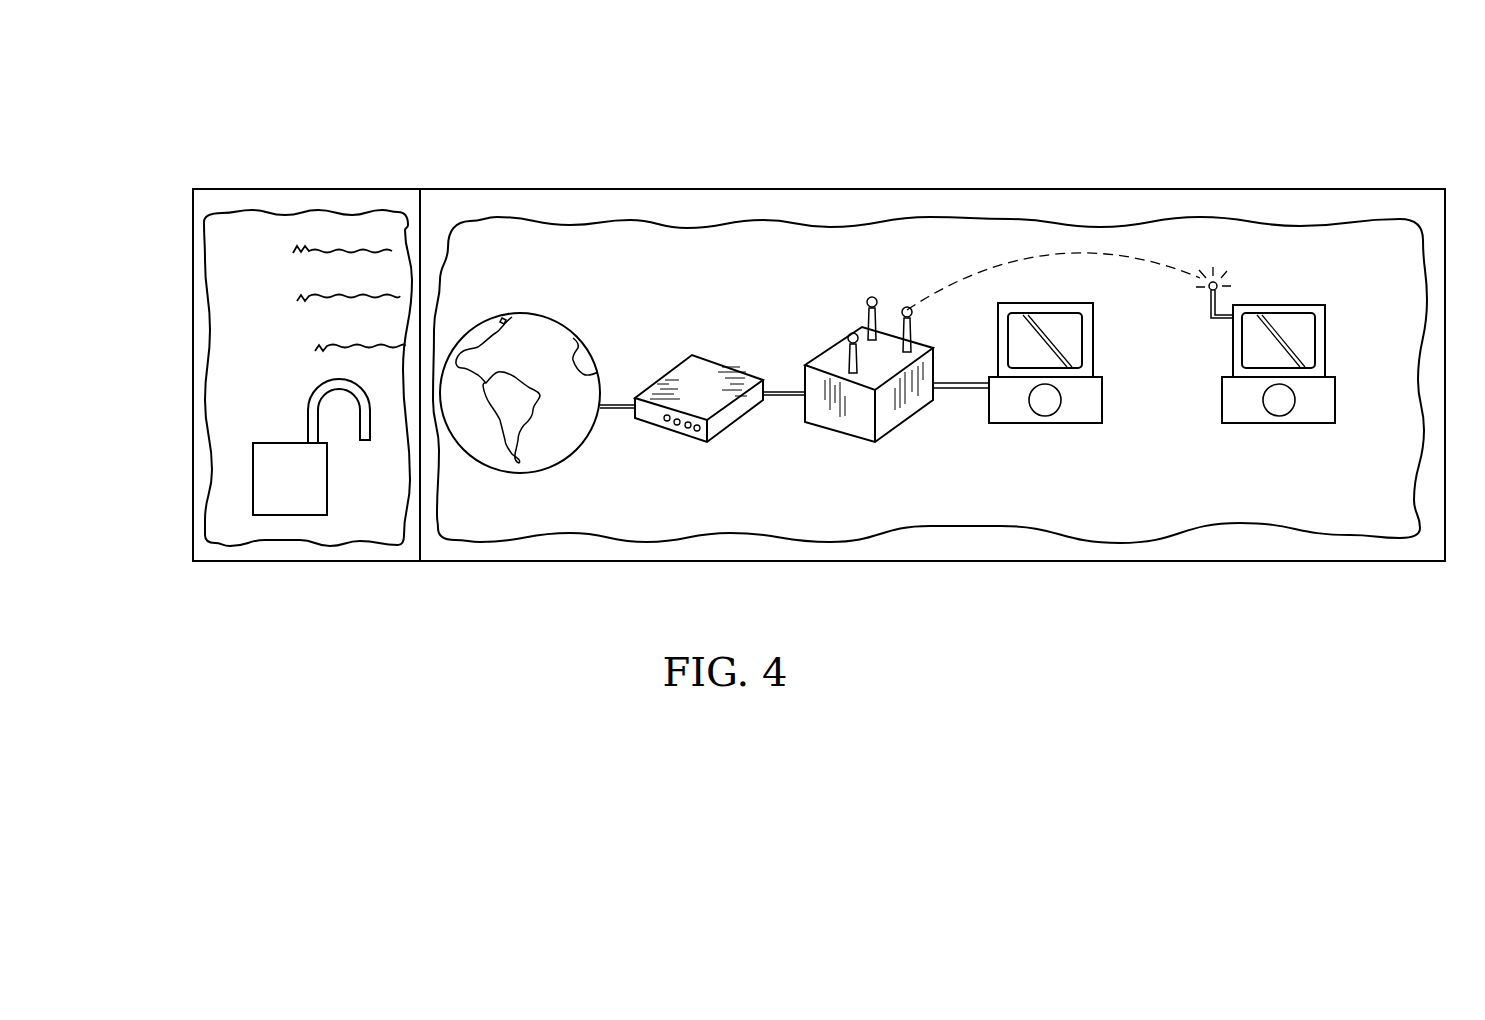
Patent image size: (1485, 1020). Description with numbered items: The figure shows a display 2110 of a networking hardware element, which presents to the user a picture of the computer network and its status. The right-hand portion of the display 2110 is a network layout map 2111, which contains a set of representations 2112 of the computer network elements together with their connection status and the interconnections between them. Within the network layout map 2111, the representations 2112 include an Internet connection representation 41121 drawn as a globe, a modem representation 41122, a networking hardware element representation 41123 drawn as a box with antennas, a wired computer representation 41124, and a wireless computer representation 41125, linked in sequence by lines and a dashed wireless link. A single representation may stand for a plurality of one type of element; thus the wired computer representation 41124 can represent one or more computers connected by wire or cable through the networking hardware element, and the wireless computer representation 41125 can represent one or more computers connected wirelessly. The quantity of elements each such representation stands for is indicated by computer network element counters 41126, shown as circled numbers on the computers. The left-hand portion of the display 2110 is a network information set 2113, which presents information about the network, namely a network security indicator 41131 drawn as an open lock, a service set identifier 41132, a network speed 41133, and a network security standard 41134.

The display 2110 is at (452, 644).
The network layout map 2111 is at (1152, 543).
The representations 2112 is at (1044, 93).
The network information set 2113 is at (237, 545).
The Internet connection representation 41121 is at (532, 312).
The modem representation 41122 is at (710, 355).
The networking hardware element representation 41123 is at (862, 327).
The wired computer representation 41124 is at (1043, 303).
The wireless computer representation 41125 is at (1278, 305).
The computer network element counters 41126 is at (1045, 423).
The network security indicator 41131 is at (311, 447).
The service set identifier 41132 is at (210, 250).
The network speed 41133 is at (210, 298).
The network security standard 41134 is at (210, 349).